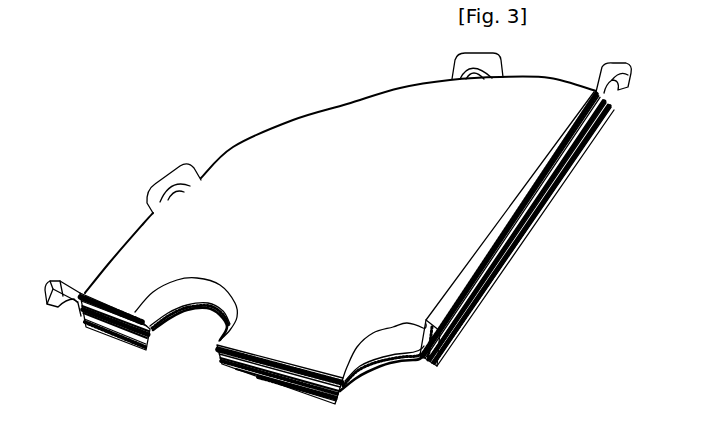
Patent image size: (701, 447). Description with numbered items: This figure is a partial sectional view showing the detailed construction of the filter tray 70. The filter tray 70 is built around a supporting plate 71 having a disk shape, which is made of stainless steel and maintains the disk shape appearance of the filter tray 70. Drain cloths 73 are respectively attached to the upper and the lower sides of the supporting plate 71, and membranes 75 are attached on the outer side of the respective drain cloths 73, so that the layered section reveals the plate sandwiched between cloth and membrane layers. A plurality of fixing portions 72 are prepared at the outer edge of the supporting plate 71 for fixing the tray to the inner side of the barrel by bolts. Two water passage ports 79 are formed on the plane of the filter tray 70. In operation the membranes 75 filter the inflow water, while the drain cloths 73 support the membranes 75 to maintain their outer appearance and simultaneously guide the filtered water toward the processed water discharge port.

The filter tray 70 is at (250, 98).
The supporting plate 71 is at (76, 315).
The fixing portion 72 is at (160, 189).
The drain cloth 73 is at (82, 290).
The membrane 75 is at (341, 390).
The water passage port 79 is at (180, 297).